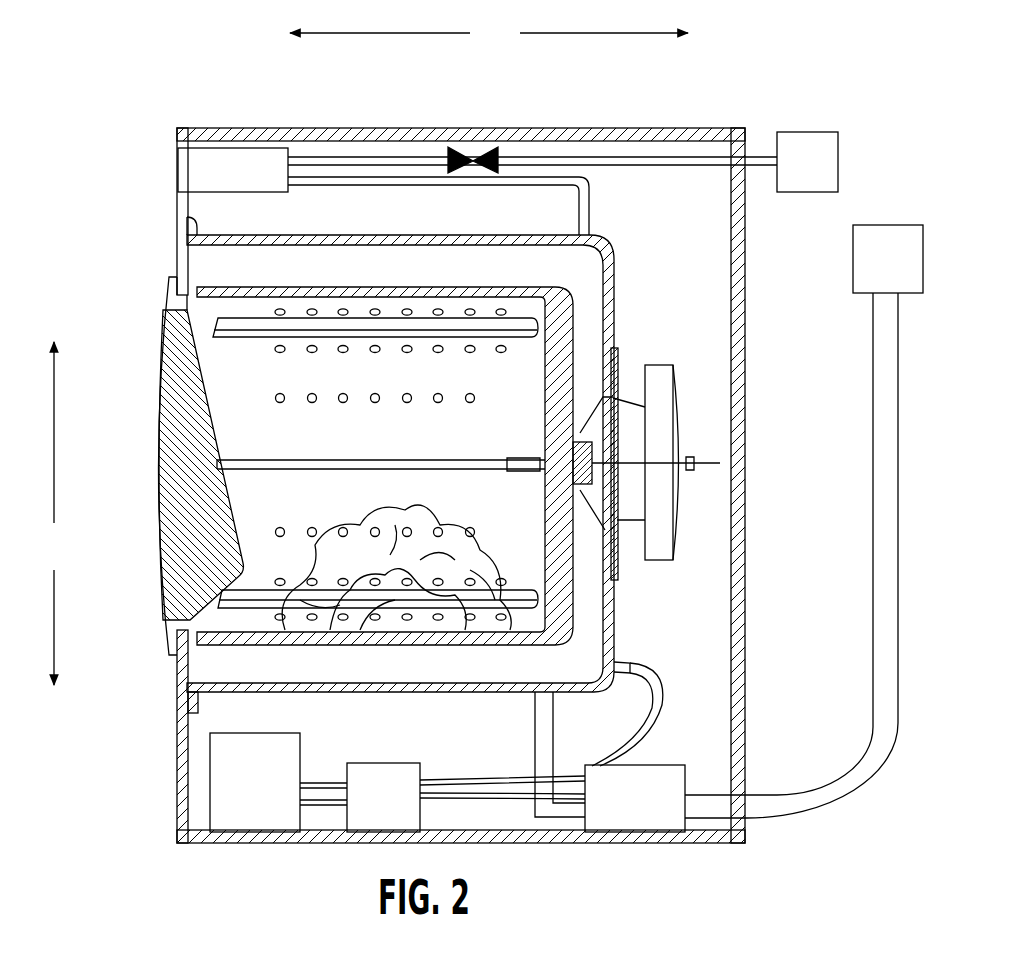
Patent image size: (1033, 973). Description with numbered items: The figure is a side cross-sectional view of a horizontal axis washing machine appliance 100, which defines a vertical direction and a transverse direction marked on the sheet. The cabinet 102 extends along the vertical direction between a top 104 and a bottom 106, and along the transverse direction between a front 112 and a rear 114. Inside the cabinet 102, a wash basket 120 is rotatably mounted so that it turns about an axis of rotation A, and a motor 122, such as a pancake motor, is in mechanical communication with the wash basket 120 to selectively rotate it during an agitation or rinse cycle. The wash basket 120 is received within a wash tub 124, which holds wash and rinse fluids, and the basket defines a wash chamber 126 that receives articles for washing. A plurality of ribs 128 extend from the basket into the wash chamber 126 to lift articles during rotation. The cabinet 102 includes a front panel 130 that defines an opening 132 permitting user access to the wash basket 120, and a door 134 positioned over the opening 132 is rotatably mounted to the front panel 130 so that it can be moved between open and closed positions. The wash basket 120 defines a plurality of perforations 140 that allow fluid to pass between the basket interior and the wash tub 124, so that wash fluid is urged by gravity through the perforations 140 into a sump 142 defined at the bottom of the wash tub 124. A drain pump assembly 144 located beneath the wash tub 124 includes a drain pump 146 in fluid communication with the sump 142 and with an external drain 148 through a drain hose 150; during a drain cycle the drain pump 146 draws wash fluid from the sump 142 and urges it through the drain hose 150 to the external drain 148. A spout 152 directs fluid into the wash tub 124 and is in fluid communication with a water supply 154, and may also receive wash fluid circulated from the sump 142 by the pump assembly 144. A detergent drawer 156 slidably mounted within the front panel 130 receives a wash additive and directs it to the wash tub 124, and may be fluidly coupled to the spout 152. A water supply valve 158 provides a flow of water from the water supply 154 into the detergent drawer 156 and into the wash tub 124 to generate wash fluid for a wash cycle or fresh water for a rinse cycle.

The washing machine appliance 100 is at (203, 66).
The cabinet 102 is at (744, 474).
The top 104 is at (756, 125).
The bottom 106 is at (773, 834).
The front 112 is at (166, 128).
The rear 114 is at (748, 291).
The wash basket 120 is at (372, 293).
The motor 122 is at (658, 405).
The wash tub 124 is at (608, 300).
The wash chamber 126 is at (243, 419).
The ribs 128 is at (318, 462).
The front panel 130 is at (182, 668).
The opening 132 is at (203, 321).
The door 134 is at (178, 520).
The perforations 140 is at (437, 400).
The sump 142 is at (576, 651).
The drain pump assembly 144 is at (706, 719).
The drain pump 146 is at (654, 815).
The external drain 148 is at (906, 272).
The drain hose 150 is at (872, 597).
The spout 152 is at (590, 208).
The water supply 154 is at (826, 175).
The detergent drawer 156 is at (244, 148).
The water supply valve 158 is at (478, 155).
The axis of rotation A is at (712, 463).